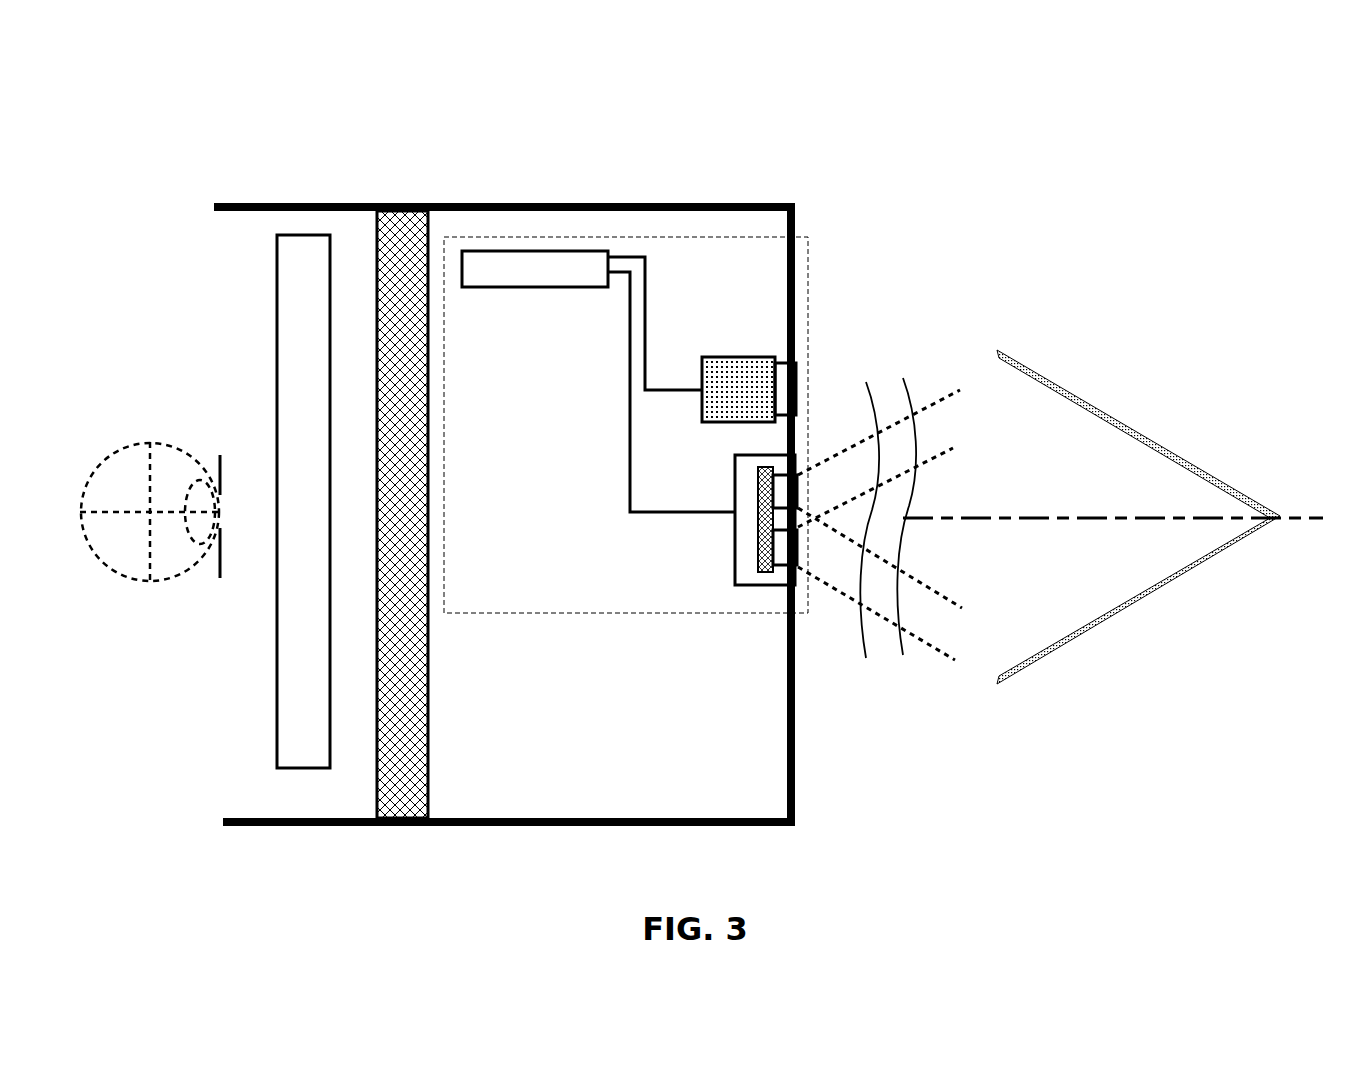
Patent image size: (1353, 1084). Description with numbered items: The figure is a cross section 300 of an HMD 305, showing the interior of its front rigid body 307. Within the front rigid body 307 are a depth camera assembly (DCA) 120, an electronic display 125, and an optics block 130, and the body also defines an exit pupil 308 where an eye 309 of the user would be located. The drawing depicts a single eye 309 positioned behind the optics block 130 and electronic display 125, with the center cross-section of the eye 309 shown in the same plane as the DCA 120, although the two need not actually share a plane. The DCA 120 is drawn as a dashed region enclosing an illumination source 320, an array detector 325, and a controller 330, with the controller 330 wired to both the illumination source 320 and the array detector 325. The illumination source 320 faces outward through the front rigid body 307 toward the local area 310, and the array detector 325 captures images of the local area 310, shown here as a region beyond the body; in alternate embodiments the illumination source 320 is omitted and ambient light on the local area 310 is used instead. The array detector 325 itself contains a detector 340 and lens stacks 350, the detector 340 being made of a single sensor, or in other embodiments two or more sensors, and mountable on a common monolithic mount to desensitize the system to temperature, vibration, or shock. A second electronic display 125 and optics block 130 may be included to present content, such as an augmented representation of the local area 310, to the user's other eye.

The cross section 300 is at (133, 68).
The HMD 305 is at (940, 208).
The front rigid body 307 is at (795, 822).
The exit pupil 308 is at (219, 455).
The eye 309 is at (113, 570).
The local area 310 is at (1120, 615).
The illumination source 320 is at (745, 357).
The array detector 325 is at (767, 585).
The controller 330 is at (467, 251).
The detector 340 is at (758, 483).
The lens stacks 350 is at (773, 505).
The depth camera assembly 120 is at (701, 238).
The electronic display 125 is at (377, 262).
The optics block 130 is at (320, 772).